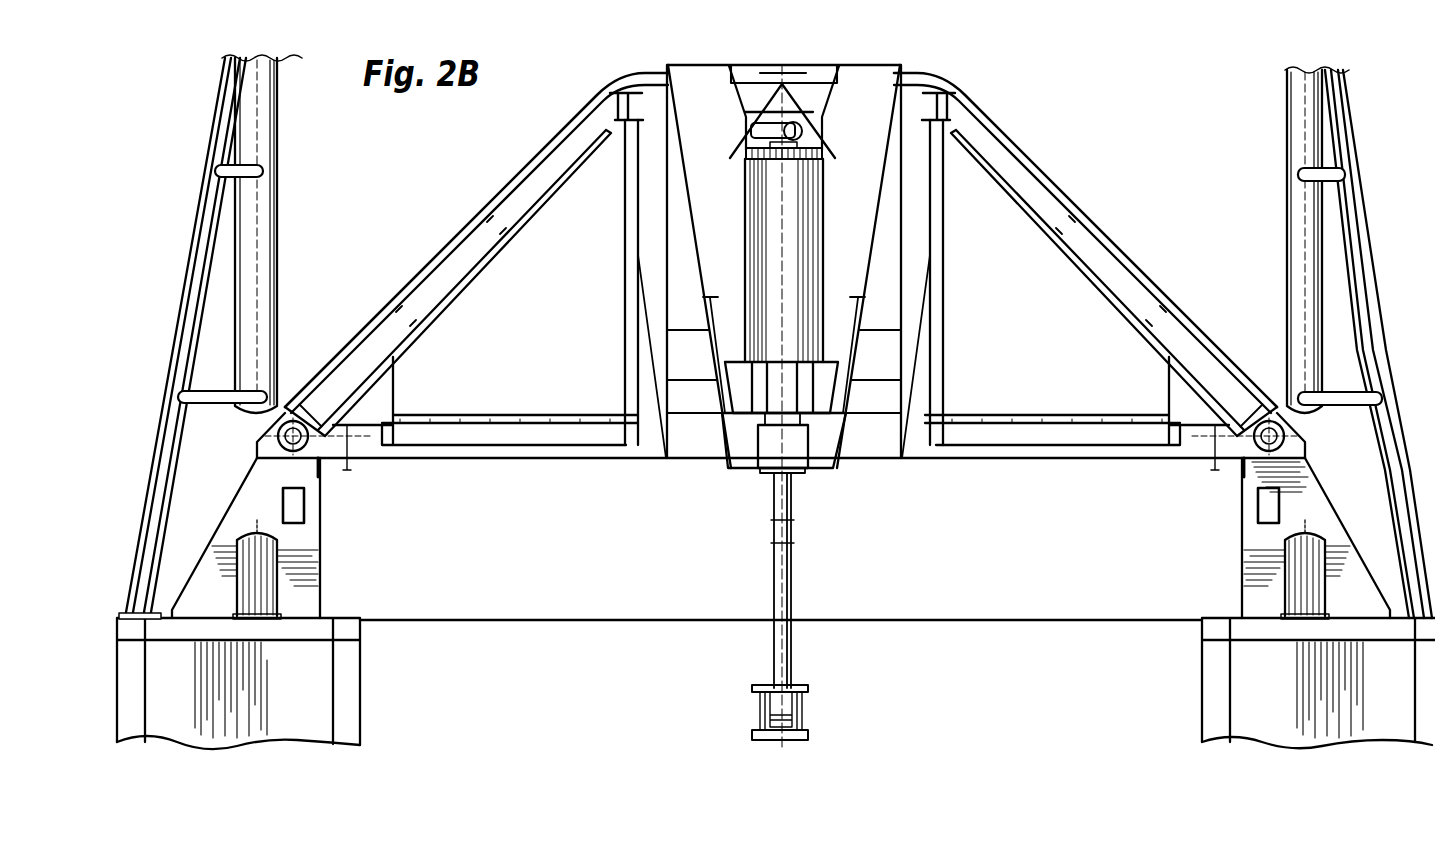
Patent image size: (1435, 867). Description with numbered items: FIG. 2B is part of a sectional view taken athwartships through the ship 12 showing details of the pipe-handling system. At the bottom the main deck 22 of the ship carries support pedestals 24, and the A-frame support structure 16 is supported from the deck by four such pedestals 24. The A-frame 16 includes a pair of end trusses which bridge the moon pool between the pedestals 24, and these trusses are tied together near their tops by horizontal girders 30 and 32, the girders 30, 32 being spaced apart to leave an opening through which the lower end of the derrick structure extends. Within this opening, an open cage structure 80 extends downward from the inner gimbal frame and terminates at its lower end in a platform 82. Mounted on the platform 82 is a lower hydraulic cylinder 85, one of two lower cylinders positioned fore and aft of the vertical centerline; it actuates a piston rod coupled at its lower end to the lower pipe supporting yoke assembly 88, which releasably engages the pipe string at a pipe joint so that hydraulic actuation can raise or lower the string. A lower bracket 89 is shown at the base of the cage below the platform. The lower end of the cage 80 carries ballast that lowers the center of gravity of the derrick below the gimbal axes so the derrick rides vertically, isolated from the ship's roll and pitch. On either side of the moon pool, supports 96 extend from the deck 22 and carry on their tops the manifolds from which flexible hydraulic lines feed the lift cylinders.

The base 12 is at (1060, 689).
The A-frame 16 is at (533, 167).
The main deck 22 is at (1218, 620).
The support pedestal 24 is at (310, 534).
The horizontal girder 30 is at (927, 103).
The horizontal girder 32 is at (637, 105).
The open cage structure 80 is at (695, 254).
The platform 82 is at (848, 410).
The lower hydraulic cylinder 85 is at (783, 289).
The lower pipe supporting yoke assembly 88 is at (795, 685).
The lower mounting bracket 89 is at (744, 456).
The support 96 is at (262, 238).